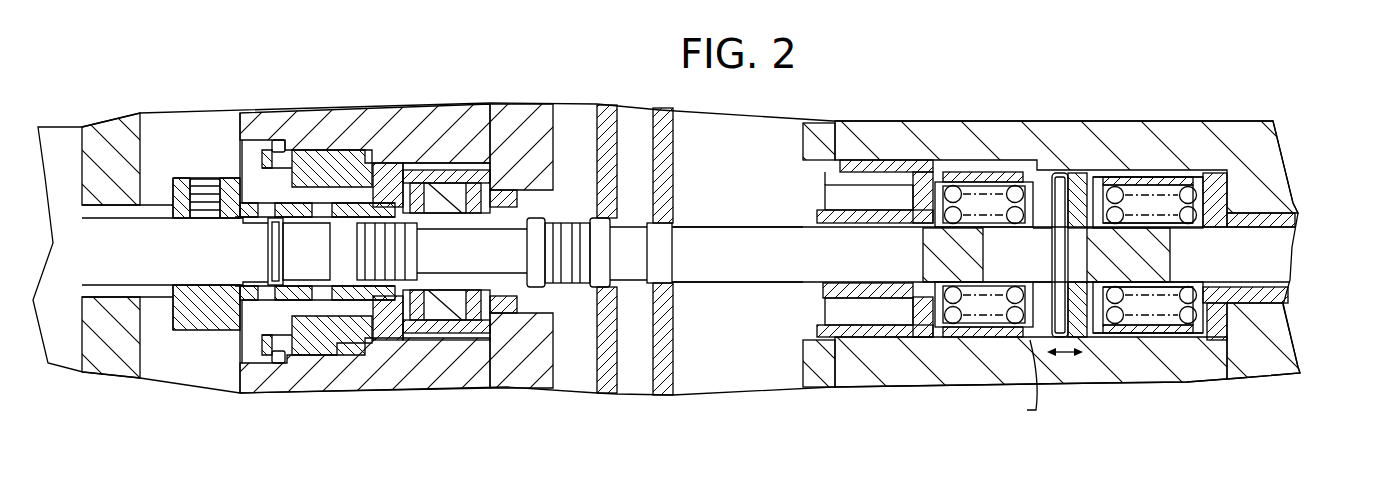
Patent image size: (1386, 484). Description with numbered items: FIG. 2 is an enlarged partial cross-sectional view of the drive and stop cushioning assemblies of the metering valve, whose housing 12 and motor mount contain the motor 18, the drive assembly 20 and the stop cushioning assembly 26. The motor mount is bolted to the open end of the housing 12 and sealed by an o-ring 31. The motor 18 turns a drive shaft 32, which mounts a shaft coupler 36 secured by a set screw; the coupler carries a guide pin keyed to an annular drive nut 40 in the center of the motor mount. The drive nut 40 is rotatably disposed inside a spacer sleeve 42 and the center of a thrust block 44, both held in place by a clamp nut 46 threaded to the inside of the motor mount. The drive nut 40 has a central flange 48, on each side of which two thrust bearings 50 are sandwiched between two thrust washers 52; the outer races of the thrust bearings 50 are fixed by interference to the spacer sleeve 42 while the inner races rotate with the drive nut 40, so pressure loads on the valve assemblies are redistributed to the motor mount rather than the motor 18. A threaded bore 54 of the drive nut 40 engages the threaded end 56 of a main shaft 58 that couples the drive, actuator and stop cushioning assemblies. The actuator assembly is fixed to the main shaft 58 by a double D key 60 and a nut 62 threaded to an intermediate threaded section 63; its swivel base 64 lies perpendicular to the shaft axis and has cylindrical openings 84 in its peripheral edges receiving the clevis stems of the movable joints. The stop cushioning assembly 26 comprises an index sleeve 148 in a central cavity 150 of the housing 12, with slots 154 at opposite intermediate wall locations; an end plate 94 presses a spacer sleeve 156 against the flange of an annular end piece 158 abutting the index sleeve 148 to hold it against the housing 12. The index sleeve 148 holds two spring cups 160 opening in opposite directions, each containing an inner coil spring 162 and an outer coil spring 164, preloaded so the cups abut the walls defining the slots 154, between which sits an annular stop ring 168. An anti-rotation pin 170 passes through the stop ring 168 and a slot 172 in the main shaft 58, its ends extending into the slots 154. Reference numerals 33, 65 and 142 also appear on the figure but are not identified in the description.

The valve housing 12 is at (1212, 368).
The motor 18 is at (58, 340).
The drive assembly 20 is at (331, 150).
The stop cushioning assembly 26 is at (1044, 162).
The o-ring 31 is at (201, 190).
The drive shaft 32 is at (143, 230).
The coupling sleeve 33 is at (300, 256).
The shaft coupler 36 is at (190, 318).
The drive nut 40 is at (530, 217).
The spacer sleeve 42 is at (410, 320).
The thrust block 44 is at (404, 148).
The clamp nut 46 is at (303, 355).
The central flange 48 is at (445, 185).
The thrust bearings 50 is at (470, 323).
The thrust washers 52 is at (417, 172).
The threaded bore 54 is at (347, 283).
The threaded end 56 is at (397, 258).
The main shaft 58 is at (713, 283).
The double D key 60 is at (663, 237).
The nut 62 is at (580, 300).
The intermediate threaded section 63 is at (556, 325).
The swivel base 64 is at (668, 170).
The retaining ring 65 is at (628, 284).
The cylindrical opening 84 is at (640, 140).
The end plate 94 is at (810, 130).
The lower sleeve 142 is at (863, 330).
The index sleeve 148 is at (870, 165).
The central cavity 150 is at (1267, 207).
The intermediate slots 154 is at (1147, 180).
The spacer sleeve 156 is at (1290, 298).
The annular end piece 158 is at (811, 297).
The spring cups 160 is at (1028, 172).
The inner coil spring 162 is at (957, 188).
The outer coil spring 164 is at (987, 303).
The stop ring 168 is at (1043, 252).
The anti-rotation pin 170 is at (1062, 182).
The slot 172 is at (990, 243).